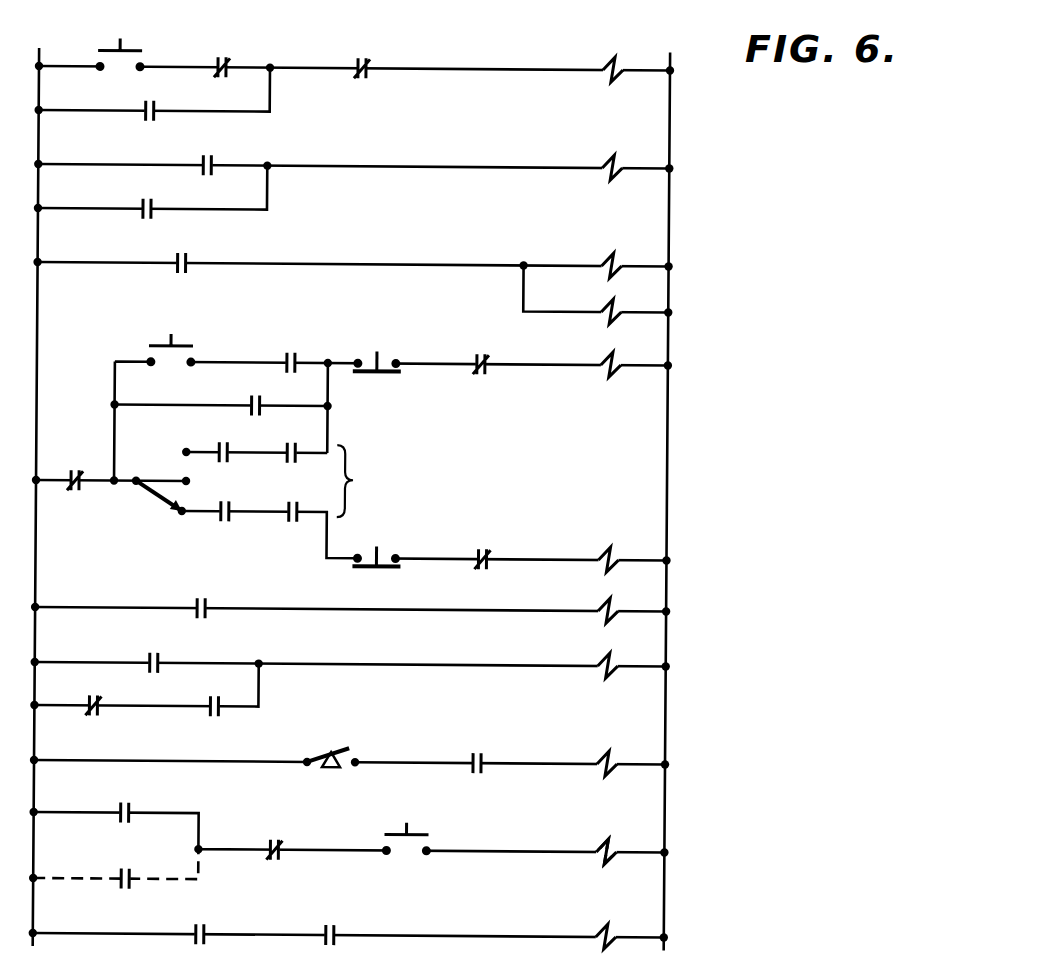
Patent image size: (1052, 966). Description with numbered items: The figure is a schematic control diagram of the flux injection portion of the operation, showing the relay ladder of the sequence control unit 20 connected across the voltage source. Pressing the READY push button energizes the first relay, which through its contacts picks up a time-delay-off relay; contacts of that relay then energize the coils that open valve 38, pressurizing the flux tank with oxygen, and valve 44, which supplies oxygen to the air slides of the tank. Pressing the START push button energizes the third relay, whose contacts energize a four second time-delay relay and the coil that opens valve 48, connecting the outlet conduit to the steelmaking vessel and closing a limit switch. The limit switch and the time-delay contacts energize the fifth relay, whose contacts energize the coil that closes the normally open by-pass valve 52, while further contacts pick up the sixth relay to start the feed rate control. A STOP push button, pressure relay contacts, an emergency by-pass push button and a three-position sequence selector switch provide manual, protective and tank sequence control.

The sequence control unit 20 is at (672, 469).
The valve 38 is at (761, 260).
The valve 44 is at (725, 311).
The valve 48 is at (714, 662).
The by-pass valve 52 is at (718, 843).